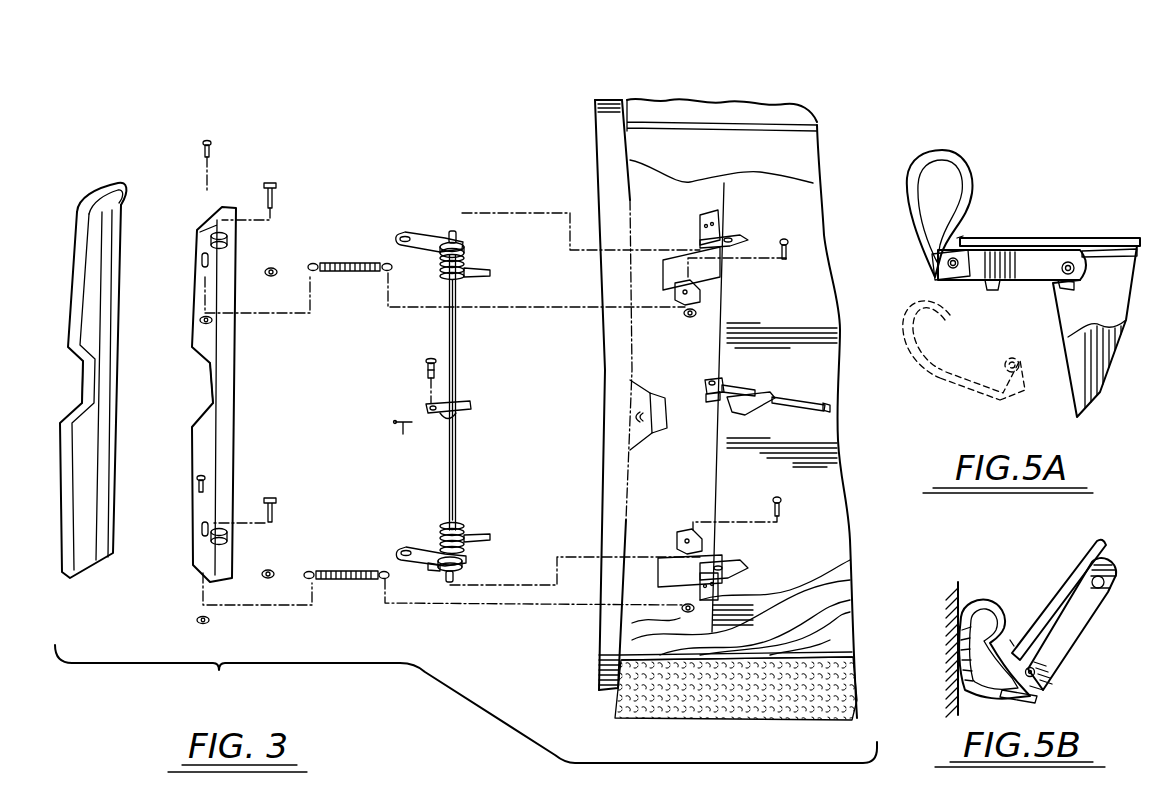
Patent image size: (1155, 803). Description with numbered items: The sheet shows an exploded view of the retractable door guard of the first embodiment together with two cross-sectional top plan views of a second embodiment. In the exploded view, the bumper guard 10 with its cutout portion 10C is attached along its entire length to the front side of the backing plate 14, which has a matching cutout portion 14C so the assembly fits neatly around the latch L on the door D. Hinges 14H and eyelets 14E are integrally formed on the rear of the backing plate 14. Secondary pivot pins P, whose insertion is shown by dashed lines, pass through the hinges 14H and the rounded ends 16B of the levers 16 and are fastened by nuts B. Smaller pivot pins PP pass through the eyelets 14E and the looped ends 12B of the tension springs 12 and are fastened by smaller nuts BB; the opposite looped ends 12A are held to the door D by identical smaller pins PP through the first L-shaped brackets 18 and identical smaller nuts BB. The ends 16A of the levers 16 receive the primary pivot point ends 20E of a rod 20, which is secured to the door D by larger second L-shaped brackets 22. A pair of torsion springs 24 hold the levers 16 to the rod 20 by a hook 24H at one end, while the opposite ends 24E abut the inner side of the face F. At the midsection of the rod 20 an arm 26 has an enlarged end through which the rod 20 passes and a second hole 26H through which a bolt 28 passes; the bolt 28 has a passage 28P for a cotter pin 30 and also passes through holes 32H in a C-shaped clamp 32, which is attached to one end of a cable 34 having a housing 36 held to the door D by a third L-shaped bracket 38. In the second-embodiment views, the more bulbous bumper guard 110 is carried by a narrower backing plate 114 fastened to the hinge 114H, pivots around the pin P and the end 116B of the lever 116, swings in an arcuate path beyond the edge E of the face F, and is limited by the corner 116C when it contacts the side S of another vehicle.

In FIG. 3, the bumper guard 10 is at (108, 182).
In FIG. 3, the cutout portion 10C is at (78, 390).
In FIG. 3, the tension springs 12 is at (444, 420).
In FIG. 3, the looped ends 12A is at (383, 272).
In FIG. 3, the looped ends 12B is at (315, 263).
In FIG. 3, the backing plate 14 is at (228, 205).
In FIG. 3, the cutout portion 14C is at (211, 387).
In FIG. 3, the eyelets 14E is at (203, 262).
In FIG. 3, the hinges 14H is at (227, 230).
In FIG. 3, the levers 16 is at (461, 371).
In FIG. 3, the ends 16A is at (464, 248).
In FIG. 3, the rounded ends 16B is at (402, 236).
In FIG. 3, the first L-shaped brackets 18 is at (701, 284).
In FIG. 3, the rod 20 is at (573, 405).
In FIG. 3, the primary pivot point ends 20E is at (462, 213).
In FIG. 5A, the primary pivot point ends 20E is at (1075, 254).
In FIG. 3, the second L-shaped brackets 22 is at (727, 233).
In FIG. 3, the torsion springs 24 is at (464, 444).
In FIG. 3, the opposite ends 24E is at (482, 278).
In FIG. 5A, the opposite ends 24E is at (1110, 247).
In FIG. 3, the hook 24H is at (430, 566).
In FIG. 5A, the hook 24H is at (1060, 273).
In FIG. 3, the arm 26 is at (418, 416).
In FIG. 3, the second hole 26H is at (430, 407).
In FIG. 3, the bolt 28 is at (428, 360).
In FIG. 3, the passage 28P is at (428, 378).
In FIG. 3, the cotter pin 30 is at (398, 435).
In FIG. 3, the C-shaped clamp 32 is at (714, 413).
In FIG. 3, the holes 32H is at (712, 380).
In FIG. 3, the cable 34 is at (742, 390).
In FIG. 3, the housing 36 is at (790, 397).
In FIG. 3, the third L-shaped bracket 38 is at (740, 410).
In FIG. 5A, the bumper guard 110 is at (965, 160).
In FIG. 5B, the bumper guard 110 is at (983, 597).
In FIG. 5A, the backing plate 114 is at (954, 243).
In FIG. 5B, the backing plate 114 is at (1037, 697).
In FIG. 5A, the hinge 114H is at (953, 268).
In FIG. 5A, the lever 116 is at (1014, 267).
In FIG. 5B, the lever 116 is at (1074, 637).
In FIG. 5A, the outer end 116B is at (979, 281).
In FIG. 5B, the outer end 116B is at (1040, 672).
In FIG. 5B, the corner 116C is at (1033, 690).
In FIG. 3, the nuts B is at (266, 275).
In FIG. 3, the smaller nuts BB is at (212, 322).
In FIG. 3, the door D is at (617, 177).
In FIG. 5A, the door D is at (1102, 386).
In FIG. 5A, the edge E is at (960, 235).
In FIG. 5B, the edge E is at (1012, 643).
In FIG. 5A, the outer face F is at (1020, 237).
In FIG. 5B, the outer face F is at (1055, 587).
In FIG. 3, the latch L is at (650, 403).
In FIG. 3, the secondary pivot pins P is at (278, 195).
In FIG. 5A, the secondary pivot pins P is at (953, 270).
In FIG. 5B, the secondary pivot pins P is at (1052, 662).
In FIG. 3, the smaller pivot pins PP is at (201, 147).
In FIG. 5B, the side S is at (962, 597).